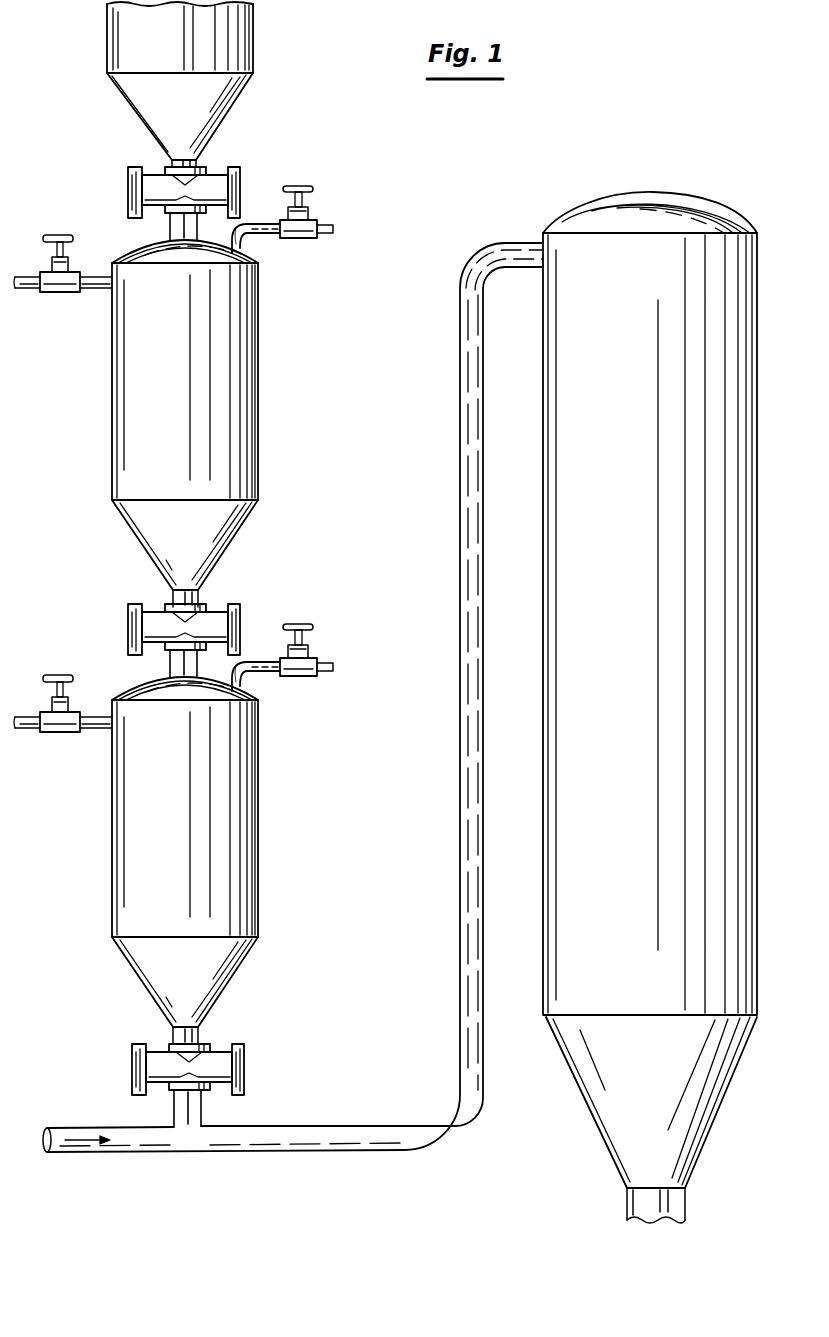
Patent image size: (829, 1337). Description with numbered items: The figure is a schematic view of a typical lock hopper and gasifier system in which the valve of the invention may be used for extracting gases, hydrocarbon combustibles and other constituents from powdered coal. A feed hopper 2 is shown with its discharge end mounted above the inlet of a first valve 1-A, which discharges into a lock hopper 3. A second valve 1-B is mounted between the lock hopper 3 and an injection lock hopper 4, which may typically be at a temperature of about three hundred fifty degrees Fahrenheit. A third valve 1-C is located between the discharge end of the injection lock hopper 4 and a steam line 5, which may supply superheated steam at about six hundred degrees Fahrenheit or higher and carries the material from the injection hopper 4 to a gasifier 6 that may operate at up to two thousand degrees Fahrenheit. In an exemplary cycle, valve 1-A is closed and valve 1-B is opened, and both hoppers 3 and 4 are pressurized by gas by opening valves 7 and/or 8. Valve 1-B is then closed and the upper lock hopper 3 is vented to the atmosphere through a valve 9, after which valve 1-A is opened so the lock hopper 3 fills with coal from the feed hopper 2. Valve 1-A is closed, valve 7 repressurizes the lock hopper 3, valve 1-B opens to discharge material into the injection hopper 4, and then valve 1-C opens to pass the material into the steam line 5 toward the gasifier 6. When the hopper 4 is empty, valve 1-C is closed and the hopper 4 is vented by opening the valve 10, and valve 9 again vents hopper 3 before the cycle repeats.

The feed hopper 2 is at (253, 44).
The first valve 1-A is at (128, 172).
The second valve 1-B is at (133, 605).
The third valve 1-C is at (248, 1062).
The lock hopper 3 is at (127, 465).
The injection lock hopper 4 is at (120, 888).
The steam line 5 is at (288, 1143).
The gasifier 6 is at (552, 678).
The valve 7 is at (50, 290).
The valve 8 is at (52, 723).
The valve 9 is at (298, 187).
The valve 10 is at (302, 624).